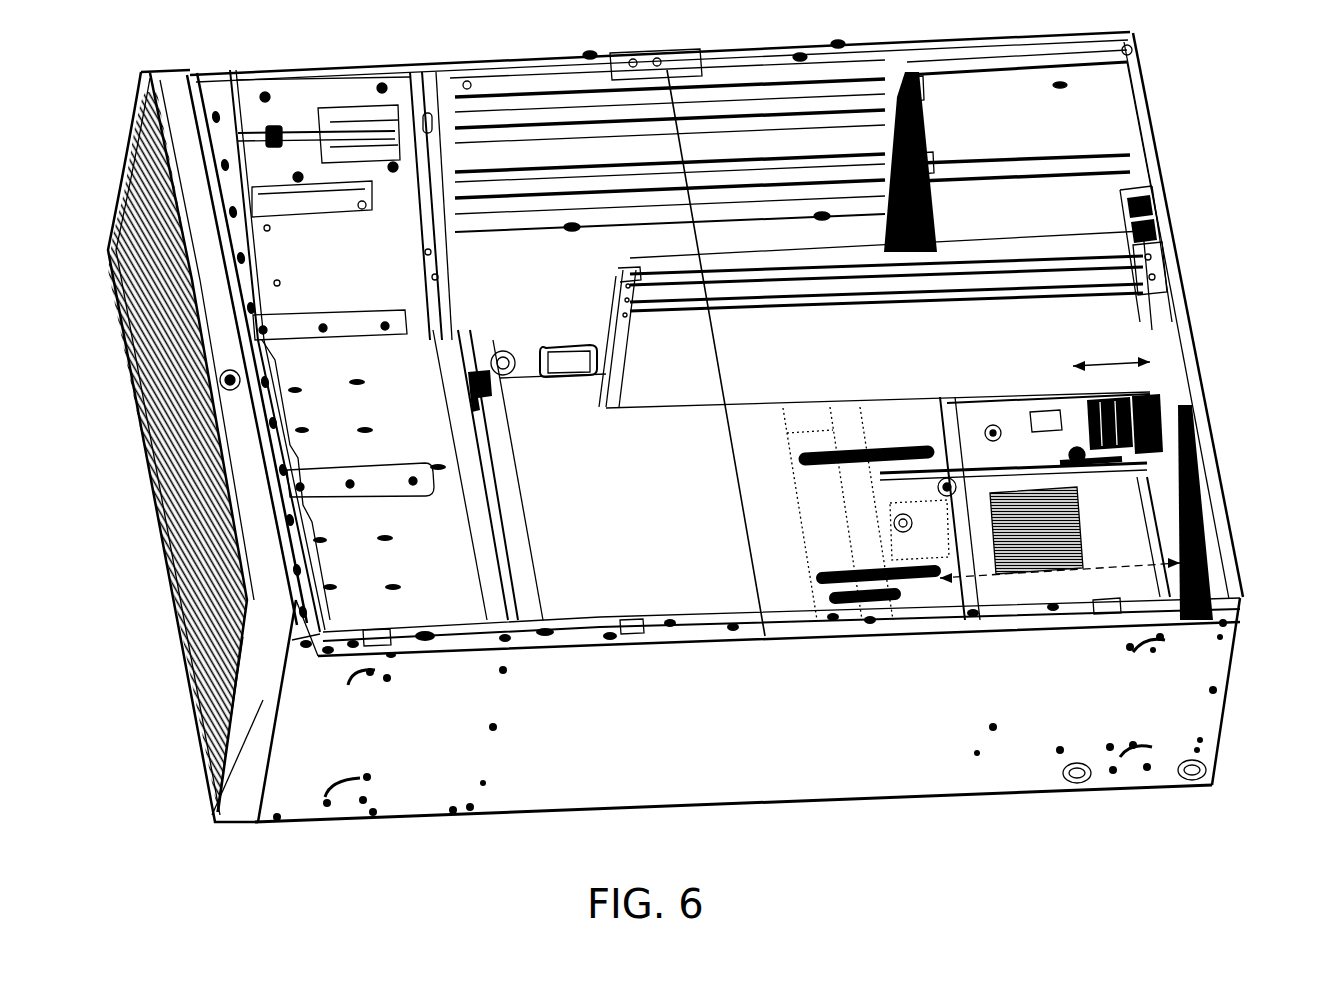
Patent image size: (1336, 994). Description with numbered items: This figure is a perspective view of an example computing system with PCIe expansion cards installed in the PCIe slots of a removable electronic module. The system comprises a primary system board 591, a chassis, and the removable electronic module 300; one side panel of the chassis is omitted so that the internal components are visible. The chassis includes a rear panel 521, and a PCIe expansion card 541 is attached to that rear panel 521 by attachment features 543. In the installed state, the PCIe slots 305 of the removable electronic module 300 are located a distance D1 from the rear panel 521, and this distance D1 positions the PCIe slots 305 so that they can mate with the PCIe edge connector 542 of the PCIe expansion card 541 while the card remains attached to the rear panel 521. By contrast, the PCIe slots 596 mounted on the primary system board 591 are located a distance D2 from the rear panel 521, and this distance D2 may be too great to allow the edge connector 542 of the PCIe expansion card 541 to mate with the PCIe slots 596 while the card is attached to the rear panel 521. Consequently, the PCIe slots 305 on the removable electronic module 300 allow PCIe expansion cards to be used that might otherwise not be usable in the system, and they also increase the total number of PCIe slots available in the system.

The rear panel 521 is at (1148, 118).
The PCIe expansion card 541 is at (1103, 277).
The attachment features 543 is at (1160, 280).
The distance D1 is at (1093, 360).
The PCIe edge connector 542 is at (1040, 395).
The PCIe slots 305 is at (1030, 412).
The primary system board 591 is at (608, 570).
The PCIe slots 596 is at (832, 575).
The removable electronic module 300 is at (997, 463).
The distance D2 is at (1062, 577).